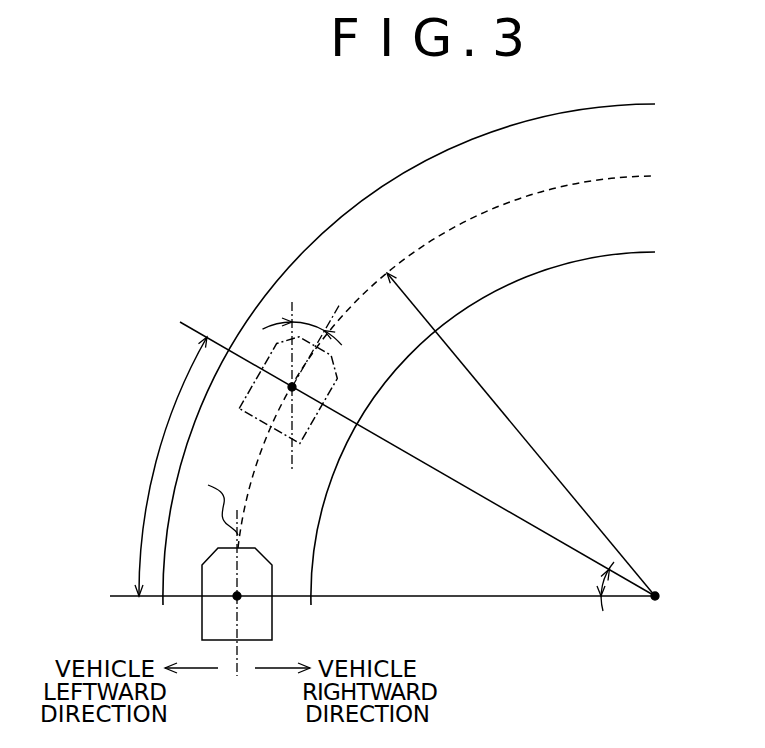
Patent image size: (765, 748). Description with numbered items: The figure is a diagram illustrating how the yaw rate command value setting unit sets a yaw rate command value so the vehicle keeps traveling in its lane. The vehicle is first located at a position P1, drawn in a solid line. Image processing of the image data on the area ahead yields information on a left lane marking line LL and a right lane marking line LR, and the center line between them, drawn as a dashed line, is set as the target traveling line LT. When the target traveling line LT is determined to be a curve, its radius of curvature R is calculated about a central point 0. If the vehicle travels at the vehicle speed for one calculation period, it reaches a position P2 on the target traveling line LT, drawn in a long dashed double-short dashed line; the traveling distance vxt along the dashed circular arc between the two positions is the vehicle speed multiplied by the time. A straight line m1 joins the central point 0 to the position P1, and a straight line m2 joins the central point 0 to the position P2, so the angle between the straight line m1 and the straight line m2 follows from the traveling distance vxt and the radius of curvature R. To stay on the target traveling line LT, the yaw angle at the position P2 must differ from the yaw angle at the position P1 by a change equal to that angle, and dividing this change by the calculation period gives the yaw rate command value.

The left lane marking line LL is at (390, 176).
The target traveling line LT is at (430, 242).
The right lane marking line LR is at (490, 296).
The radius of curvature R is at (520, 430).
The straight line m1 is at (413, 597).
The straight line m2 is at (440, 486).
The position P1 is at (233, 596).
The position P2 is at (289, 389).
The central point 0 is at (660, 596).
The traveling distance vxt is at (156, 461).